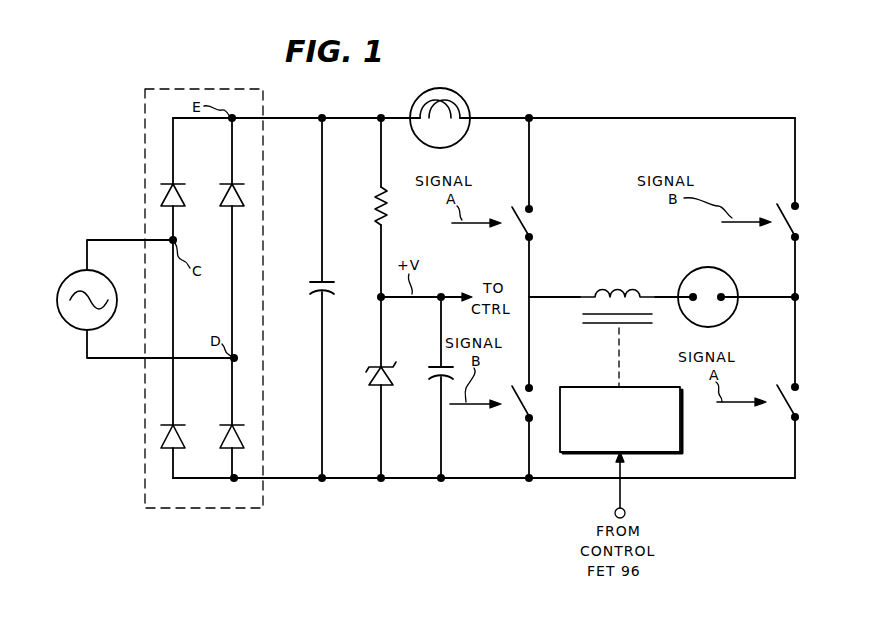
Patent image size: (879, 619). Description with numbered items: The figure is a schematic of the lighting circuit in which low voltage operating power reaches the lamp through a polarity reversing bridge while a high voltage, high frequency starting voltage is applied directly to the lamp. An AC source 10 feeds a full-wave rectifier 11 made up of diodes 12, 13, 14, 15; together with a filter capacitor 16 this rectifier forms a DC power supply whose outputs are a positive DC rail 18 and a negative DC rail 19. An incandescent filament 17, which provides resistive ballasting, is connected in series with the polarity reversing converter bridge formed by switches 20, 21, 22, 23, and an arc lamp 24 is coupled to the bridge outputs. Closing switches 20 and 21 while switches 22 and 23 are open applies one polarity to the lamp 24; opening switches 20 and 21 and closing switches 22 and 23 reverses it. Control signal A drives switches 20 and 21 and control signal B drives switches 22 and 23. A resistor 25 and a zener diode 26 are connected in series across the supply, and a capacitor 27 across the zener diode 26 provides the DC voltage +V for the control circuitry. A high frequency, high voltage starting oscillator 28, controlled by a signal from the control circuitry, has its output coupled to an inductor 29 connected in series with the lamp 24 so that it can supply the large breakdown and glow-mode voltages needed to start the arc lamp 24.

The AC source 10 is at (75, 270).
The full-wave rectifier 11 is at (170, 89).
The diode 12 is at (178, 198).
The diode 13 is at (228, 198).
The diode 14 is at (176, 430).
The diode 15 is at (226, 436).
The filter capacitor 16 is at (312, 290).
The incandescent filament 17 is at (465, 98).
The positive DC rail 18 is at (508, 118).
The negative DC rail 19 is at (490, 480).
The switch 20 is at (540, 218).
The switch 21 is at (780, 386).
The switch 22 is at (780, 206).
The switch 23 is at (512, 410).
The arc lamp 24 is at (686, 278).
The resistor 25 is at (374, 199).
The zener diode 26 is at (374, 378).
The capacitor 27 is at (432, 378).
The starting oscillator 28 is at (633, 430).
The inductor 29 is at (612, 292).